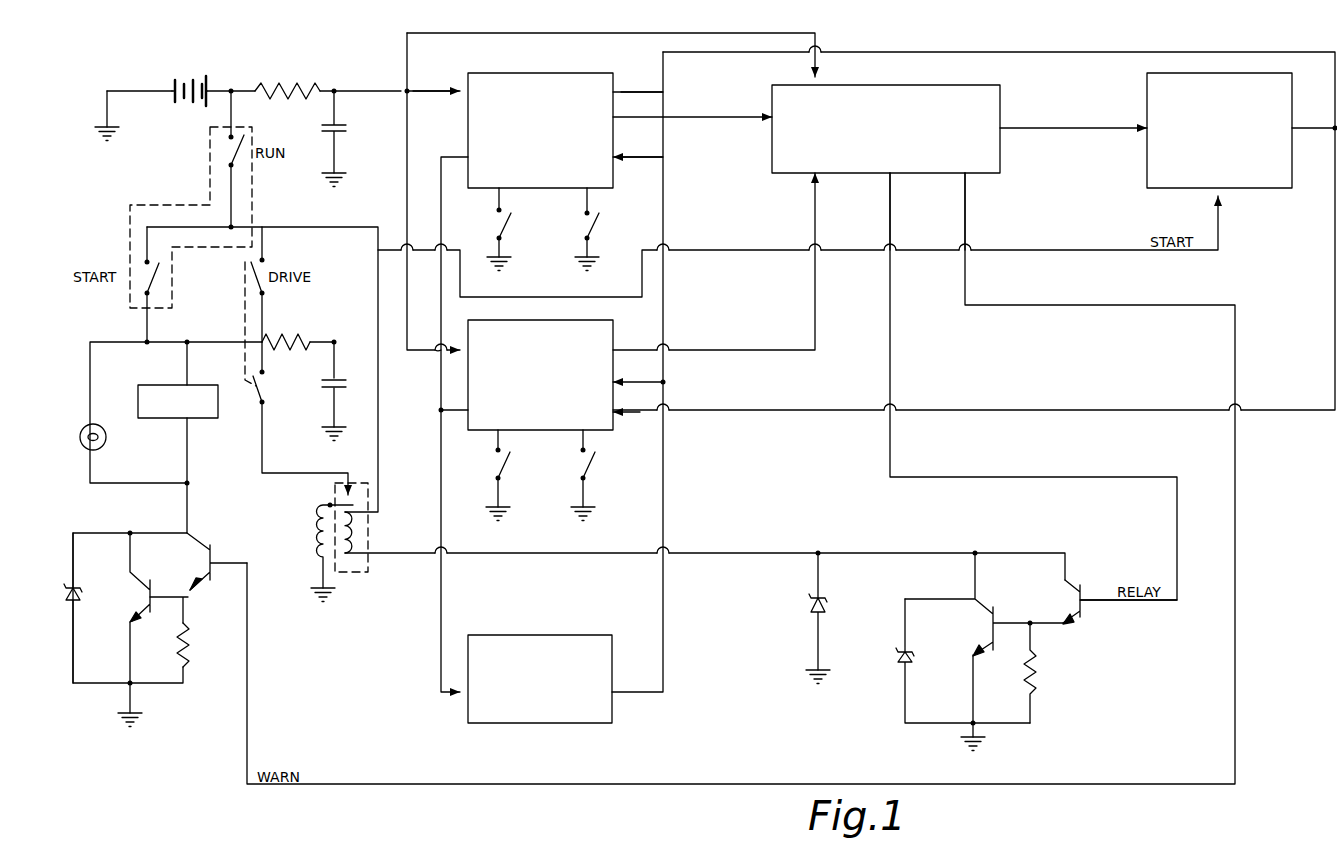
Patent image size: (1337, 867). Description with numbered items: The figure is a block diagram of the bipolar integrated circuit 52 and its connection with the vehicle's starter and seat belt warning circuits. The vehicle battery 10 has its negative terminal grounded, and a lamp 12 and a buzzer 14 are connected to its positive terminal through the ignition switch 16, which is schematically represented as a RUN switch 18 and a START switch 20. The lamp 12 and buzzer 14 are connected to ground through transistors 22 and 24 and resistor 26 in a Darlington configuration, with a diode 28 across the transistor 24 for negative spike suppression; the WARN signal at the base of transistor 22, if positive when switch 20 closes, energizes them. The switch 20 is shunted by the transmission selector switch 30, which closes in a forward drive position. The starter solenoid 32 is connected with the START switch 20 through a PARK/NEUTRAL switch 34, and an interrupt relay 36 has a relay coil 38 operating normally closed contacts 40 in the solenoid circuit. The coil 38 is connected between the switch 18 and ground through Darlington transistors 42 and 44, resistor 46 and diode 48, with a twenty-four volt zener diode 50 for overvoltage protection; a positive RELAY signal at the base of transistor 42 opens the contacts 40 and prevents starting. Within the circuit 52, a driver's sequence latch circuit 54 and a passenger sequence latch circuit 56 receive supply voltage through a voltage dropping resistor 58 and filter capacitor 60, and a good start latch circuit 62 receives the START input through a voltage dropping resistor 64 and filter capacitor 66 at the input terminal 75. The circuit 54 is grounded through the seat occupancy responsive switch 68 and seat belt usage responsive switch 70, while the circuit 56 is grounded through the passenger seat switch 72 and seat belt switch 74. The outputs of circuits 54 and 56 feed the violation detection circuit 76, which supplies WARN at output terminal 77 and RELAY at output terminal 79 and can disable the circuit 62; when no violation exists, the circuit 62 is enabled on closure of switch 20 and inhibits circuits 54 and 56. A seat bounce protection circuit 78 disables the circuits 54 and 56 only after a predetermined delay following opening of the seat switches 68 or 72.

The vehicle battery 10 is at (206, 78).
The lamp 12 is at (106, 440).
The buzzer 14 is at (208, 418).
The ignition switch 16 is at (152, 203).
The RUN switch 18 is at (242, 144).
The START switch 20 is at (156, 278).
The transistor 22 is at (214, 546).
The transistor 24 is at (152, 580).
The resistor 26 is at (188, 645).
The diode 28 is at (80, 594).
The transmission selector switch 30 is at (262, 272).
The starter solenoid 32 is at (313, 543).
The PARK/NEUTRAL switch 34 is at (266, 392).
The interrupt relay 36 is at (368, 572).
The relay coil 38 is at (357, 533).
The normally closed contacts 40 is at (355, 503).
The transistor 42 is at (1085, 617).
The transistor 44 is at (995, 610).
The resistor 46 is at (1034, 672).
The diode 48 is at (910, 652).
The zener diode 50 is at (822, 597).
The bipolar integrated circuit 52 is at (680, 421).
The driver's sequence latch circuit 54 is at (538, 74).
The passenger sequence latch circuit 56 is at (613, 330).
The voltage dropping resistor 58 is at (290, 86).
The filter capacitor 60 is at (340, 124).
The good start latch circuit 62 is at (1147, 88).
The voltage dropping resistor 64 is at (262, 335).
The filter capacitor 66 is at (346, 378).
The seat occupancy responsive switch 68 is at (507, 222).
The seat belt usage responsive switch 70 is at (595, 222).
The seat switch 72 is at (505, 462).
The seat belt switch 74 is at (590, 462).
The input terminal 75 is at (336, 338).
The violation detection circuit 76 is at (905, 85).
The output terminal 77 is at (965, 175).
The seat bounce protection circuit 78 is at (528, 635).
The output terminal 79 is at (890, 175).